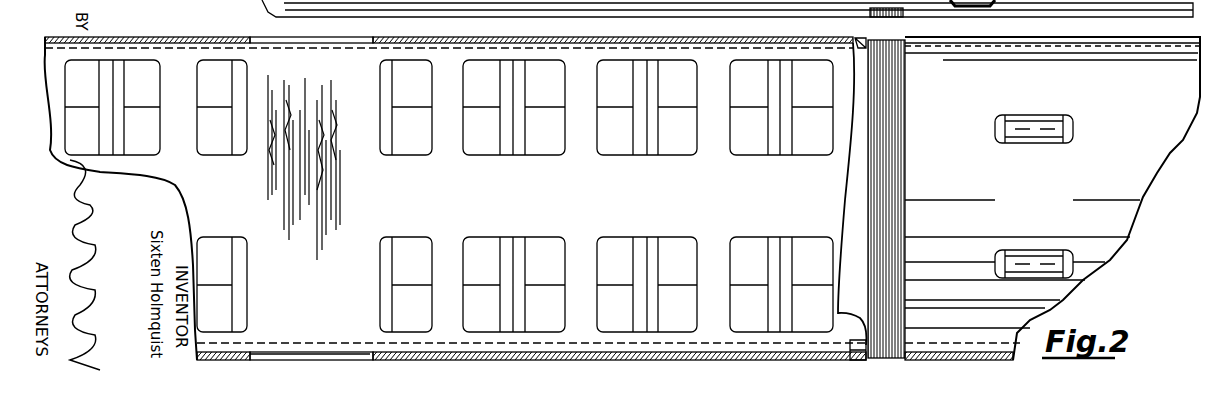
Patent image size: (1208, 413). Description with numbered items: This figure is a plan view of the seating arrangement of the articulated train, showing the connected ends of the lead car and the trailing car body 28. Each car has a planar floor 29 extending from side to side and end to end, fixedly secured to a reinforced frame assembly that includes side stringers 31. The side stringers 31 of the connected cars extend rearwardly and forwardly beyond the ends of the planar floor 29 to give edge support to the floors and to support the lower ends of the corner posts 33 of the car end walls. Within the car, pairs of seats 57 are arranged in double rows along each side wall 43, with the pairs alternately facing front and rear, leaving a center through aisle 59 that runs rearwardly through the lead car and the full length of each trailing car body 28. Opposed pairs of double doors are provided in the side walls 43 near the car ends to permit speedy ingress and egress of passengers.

The car body 28 is at (818, 198).
The planar floor 29 is at (350, 70).
The side stringers 31 is at (1047, 53).
The corner posts 33 is at (853, 40).
The side walls 43 is at (248, 352).
The seats 57 is at (133, 70).
The center through aisle 59 is at (586, 200).